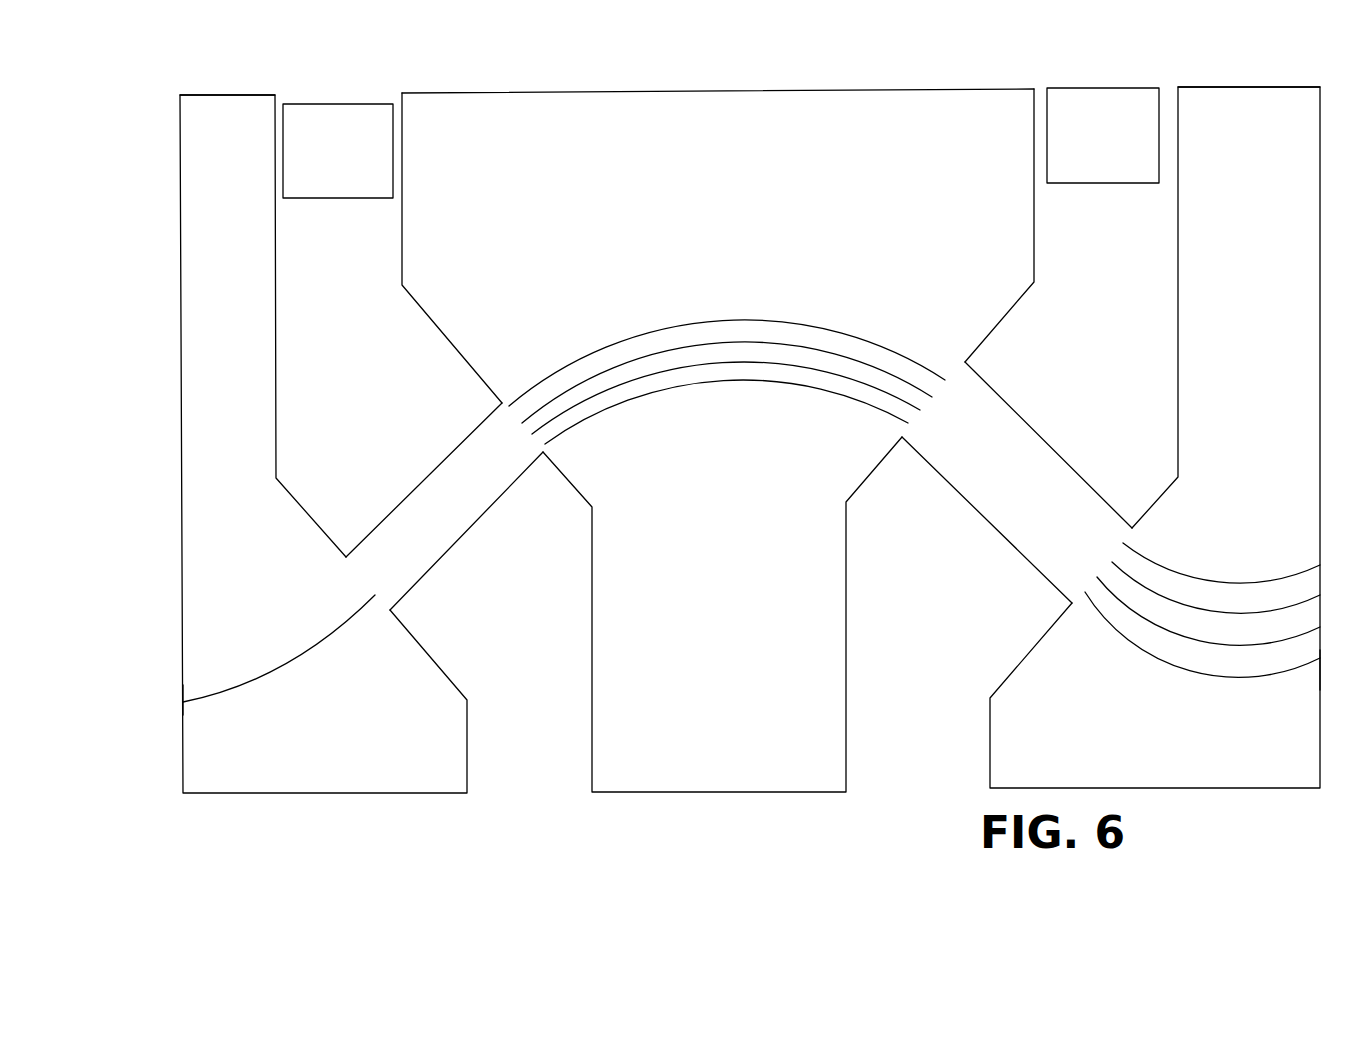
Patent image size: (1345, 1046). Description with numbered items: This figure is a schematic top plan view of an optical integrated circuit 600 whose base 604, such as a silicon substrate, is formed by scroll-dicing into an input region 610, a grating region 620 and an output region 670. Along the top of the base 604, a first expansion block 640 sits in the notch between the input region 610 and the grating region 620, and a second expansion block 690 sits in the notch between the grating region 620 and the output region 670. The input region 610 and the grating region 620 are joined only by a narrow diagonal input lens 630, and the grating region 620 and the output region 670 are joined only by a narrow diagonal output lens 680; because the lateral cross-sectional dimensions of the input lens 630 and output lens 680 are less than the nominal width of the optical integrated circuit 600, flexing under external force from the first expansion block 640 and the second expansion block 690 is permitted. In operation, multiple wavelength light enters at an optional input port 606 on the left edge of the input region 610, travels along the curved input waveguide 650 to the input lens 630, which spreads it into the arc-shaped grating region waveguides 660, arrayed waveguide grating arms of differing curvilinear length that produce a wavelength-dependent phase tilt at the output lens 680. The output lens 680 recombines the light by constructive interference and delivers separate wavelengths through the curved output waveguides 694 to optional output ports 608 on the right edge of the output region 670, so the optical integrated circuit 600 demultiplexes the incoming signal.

The optical integrated circuit 600 is at (922, 62).
The base 604 is at (450, 92).
The input port 606 is at (185, 697).
The output port 608 is at (1313, 677).
The input region 610 is at (435, 753).
The grating region 620 is at (743, 745).
The input lens 630 is at (473, 430).
The first expansion block 640 is at (378, 190).
The input waveguide 650 is at (342, 623).
The grating region waveguide 660 is at (797, 310).
The output region 670 is at (1283, 730).
The output lens 680 is at (997, 535).
The second expansion block 690 is at (1133, 172).
The output waveguide 694 is at (1193, 562).